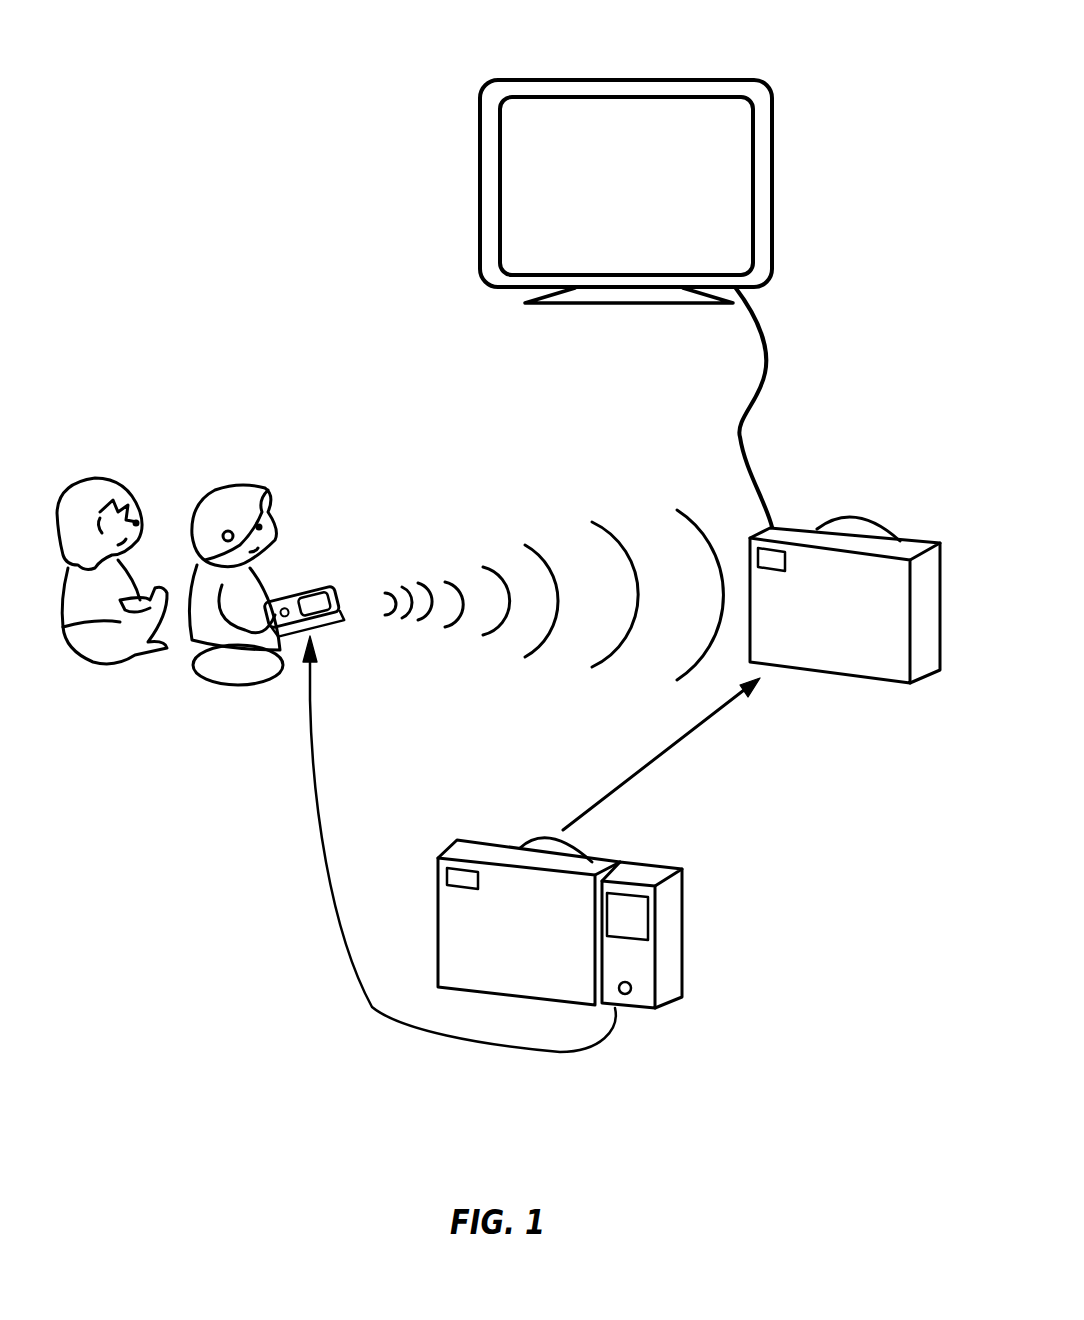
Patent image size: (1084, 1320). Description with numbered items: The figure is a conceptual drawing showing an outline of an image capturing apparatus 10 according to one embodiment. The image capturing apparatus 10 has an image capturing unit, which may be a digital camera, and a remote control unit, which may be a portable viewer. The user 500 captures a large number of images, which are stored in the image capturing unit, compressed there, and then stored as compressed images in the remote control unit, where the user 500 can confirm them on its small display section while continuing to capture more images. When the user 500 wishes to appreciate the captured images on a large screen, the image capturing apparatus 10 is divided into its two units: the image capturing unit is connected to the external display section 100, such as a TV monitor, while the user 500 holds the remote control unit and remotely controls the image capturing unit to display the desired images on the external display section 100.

The external display section 100 is at (712, 83).
The image capturing apparatus 10 is at (629, 880).
The user 500 is at (218, 500).